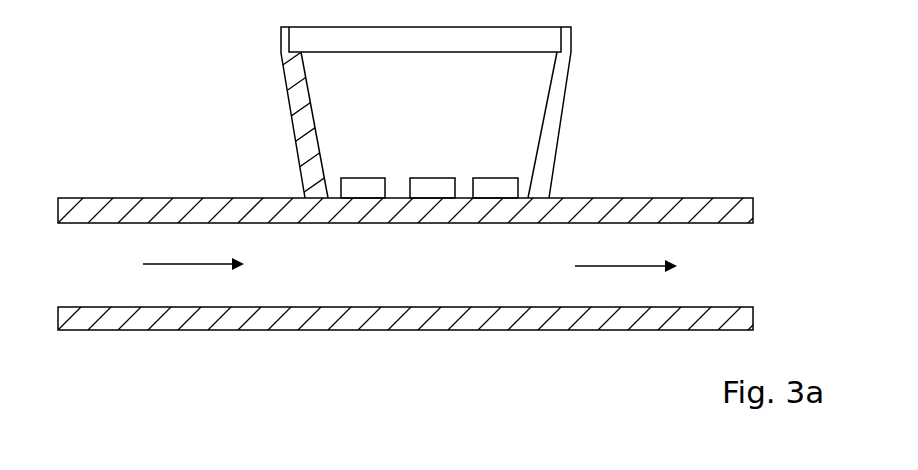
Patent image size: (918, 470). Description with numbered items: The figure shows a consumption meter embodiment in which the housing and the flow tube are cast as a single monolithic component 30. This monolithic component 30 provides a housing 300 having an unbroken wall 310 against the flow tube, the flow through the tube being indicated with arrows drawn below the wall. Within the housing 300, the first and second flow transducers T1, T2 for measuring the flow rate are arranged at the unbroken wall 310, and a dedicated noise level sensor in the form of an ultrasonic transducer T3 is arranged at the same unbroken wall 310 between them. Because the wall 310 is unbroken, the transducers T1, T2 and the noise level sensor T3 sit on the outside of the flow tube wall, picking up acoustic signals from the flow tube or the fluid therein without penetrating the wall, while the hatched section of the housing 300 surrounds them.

The single monolithic component 30 is at (547, 135).
The housing 300 is at (303, 108).
The unbroken wall 310 is at (155, 212).
The first flow transducer T1 is at (360, 187).
The second flow transducer T2 is at (492, 187).
The ultrasonic transducer T3 is at (431, 187).